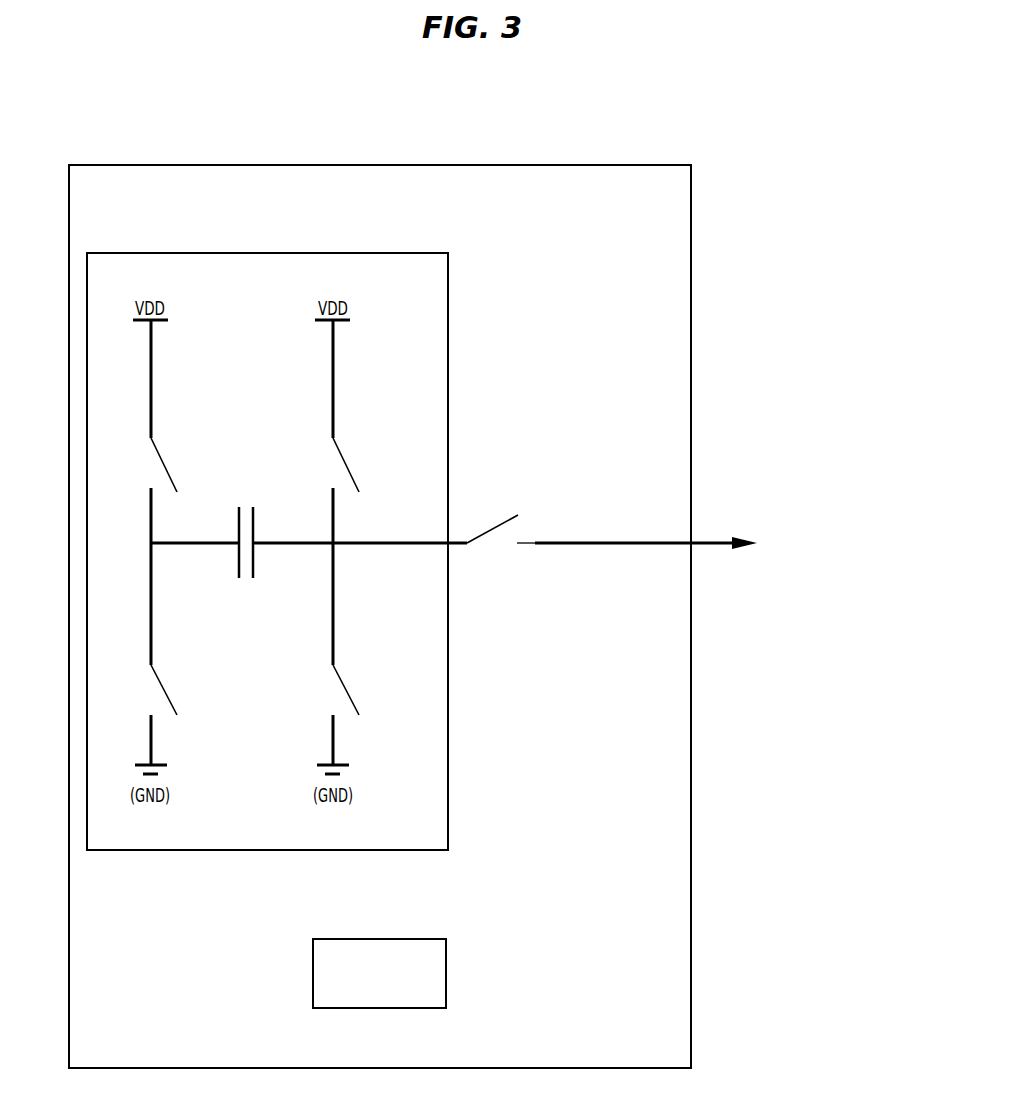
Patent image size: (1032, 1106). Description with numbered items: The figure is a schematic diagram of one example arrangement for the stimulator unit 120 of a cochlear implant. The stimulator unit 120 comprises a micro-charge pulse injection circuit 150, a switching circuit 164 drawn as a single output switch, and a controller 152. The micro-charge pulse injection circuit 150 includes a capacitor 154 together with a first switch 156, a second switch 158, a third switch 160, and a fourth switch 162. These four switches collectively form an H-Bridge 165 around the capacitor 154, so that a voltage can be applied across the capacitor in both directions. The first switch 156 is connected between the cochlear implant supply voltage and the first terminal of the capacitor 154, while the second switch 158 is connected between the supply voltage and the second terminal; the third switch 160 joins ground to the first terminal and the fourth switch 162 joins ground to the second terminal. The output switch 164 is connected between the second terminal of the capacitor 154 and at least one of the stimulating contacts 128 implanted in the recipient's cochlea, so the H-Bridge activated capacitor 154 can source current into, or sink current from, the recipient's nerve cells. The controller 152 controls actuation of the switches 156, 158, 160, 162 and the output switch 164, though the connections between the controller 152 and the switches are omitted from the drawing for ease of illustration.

The stimulator unit 120 is at (691, 230).
The micro-charge pulse injection circuit 150 is at (449, 343).
The controller 152 is at (446, 966).
The capacitor 154 is at (245, 607).
The first switch 156 is at (167, 465).
The second switch 158 is at (349, 465).
The third switch 160 is at (167, 690).
The fourth switch 162 is at (349, 690).
The switching circuit 164 is at (493, 527).
The H-Bridge 165 is at (266, 312).
The stimulating contacts 128 is at (705, 545).